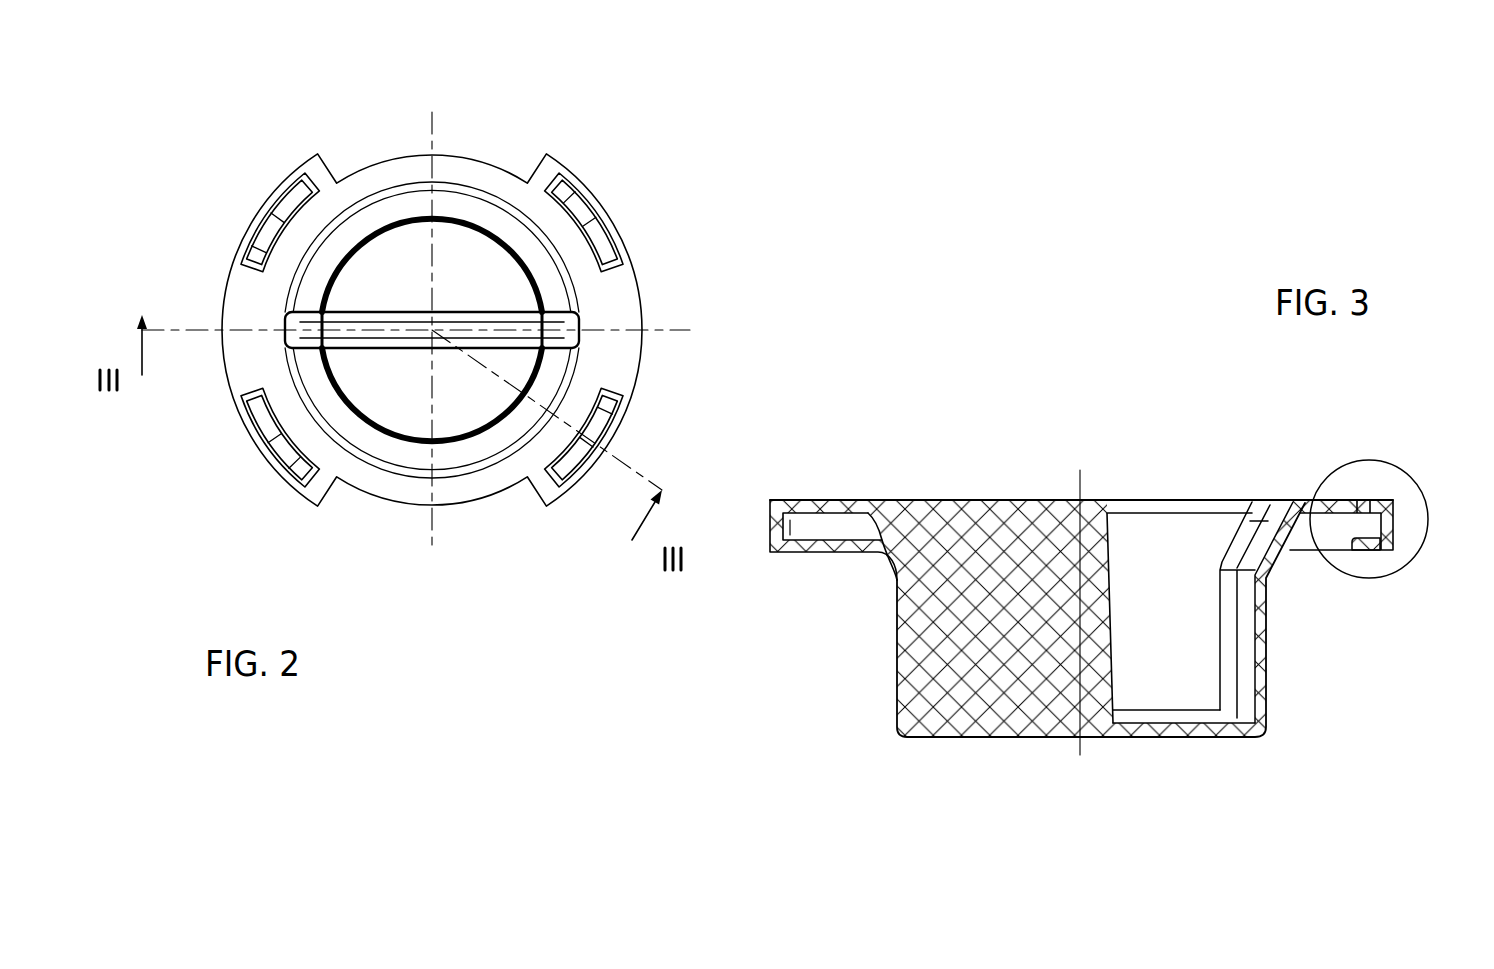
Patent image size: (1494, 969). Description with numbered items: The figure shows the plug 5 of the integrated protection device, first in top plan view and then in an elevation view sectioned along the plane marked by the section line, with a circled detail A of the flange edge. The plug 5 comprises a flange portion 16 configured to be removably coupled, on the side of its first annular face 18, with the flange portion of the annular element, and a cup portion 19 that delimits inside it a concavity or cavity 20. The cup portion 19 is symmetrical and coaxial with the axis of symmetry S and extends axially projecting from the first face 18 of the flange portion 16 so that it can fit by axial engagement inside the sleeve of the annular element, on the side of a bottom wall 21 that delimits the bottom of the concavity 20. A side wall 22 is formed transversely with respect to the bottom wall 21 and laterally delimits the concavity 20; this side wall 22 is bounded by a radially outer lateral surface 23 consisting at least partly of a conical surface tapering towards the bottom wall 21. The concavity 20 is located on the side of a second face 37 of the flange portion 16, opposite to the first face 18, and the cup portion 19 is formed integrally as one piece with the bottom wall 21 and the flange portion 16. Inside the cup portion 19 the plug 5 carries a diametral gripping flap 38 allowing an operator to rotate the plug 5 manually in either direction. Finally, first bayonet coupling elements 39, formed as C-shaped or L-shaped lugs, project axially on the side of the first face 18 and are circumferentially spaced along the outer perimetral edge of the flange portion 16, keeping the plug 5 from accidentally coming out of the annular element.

In FIG. 2, the plug 5 is at (666, 151).
In FIG. 3, the plug 5 is at (853, 701).
In FIG. 2, the flange portion 16 is at (593, 297).
In FIG. 3, the flange portion 16 is at (819, 509).
In FIG. 3, the first annular face 18 is at (838, 524).
In FIG. 2, the cup portion 19 is at (363, 227).
In FIG. 3, the cup portion 19 is at (1208, 662).
In FIG. 2, the concavity or cavity 20 is at (397, 400).
In FIG. 3, the concavity or cavity 20 is at (1170, 570).
In FIG. 3, the bottom wall 21 is at (1148, 727).
In FIG. 3, the side wall 22 is at (1260, 645).
In FIG. 3, the radially outer lateral surface 23 is at (885, 644).
In FIG. 3, the second face 37 is at (909, 490).
In FIG. 2, the gripping flap 38 is at (397, 332).
In FIG. 3, the gripping flap 38 is at (983, 507).
In FIG. 2, the first bayonet coupling elements 39 is at (272, 212).
In FIG. 3, the first bayonet coupling elements 39 is at (1386, 540).
In FIG. 3, the axis of symmetry S is at (1086, 464).
In FIG. 3, the detail A is at (1425, 465).